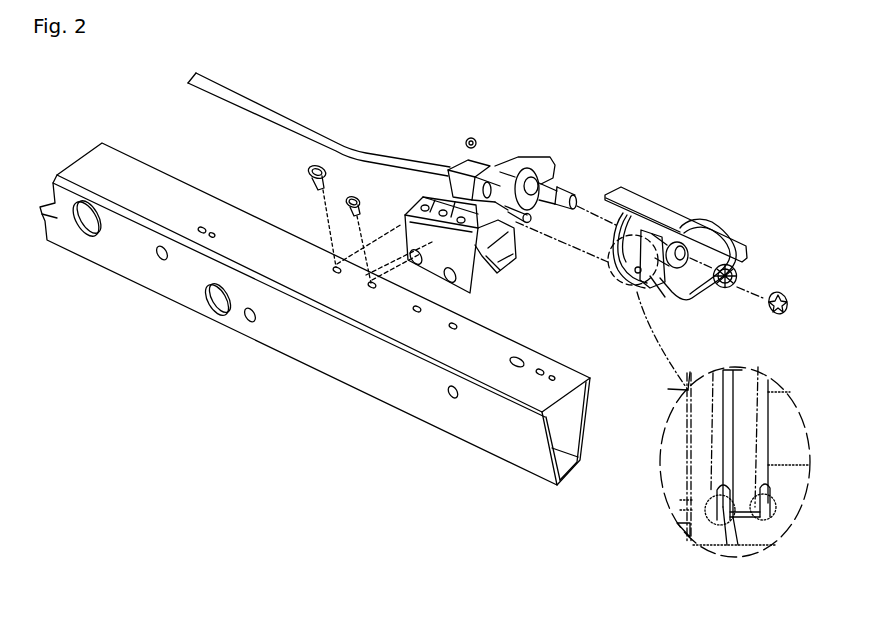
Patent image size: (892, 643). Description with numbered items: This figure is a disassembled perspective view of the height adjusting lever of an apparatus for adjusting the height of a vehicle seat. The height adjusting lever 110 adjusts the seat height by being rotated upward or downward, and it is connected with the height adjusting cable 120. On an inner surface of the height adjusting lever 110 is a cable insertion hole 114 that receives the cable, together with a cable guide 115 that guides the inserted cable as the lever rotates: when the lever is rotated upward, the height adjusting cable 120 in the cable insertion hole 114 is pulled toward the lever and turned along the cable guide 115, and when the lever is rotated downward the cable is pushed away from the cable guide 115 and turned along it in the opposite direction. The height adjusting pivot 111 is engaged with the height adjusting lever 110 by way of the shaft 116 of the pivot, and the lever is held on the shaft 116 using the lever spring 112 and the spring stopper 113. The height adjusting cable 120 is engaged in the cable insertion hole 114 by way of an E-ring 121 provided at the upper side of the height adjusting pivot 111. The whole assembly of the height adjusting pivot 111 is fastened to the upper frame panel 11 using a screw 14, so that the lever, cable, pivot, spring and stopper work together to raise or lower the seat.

The upper frame panel 11 is at (150, 275).
The screw 14 is at (307, 168).
The height adjusting lever 110 is at (640, 198).
The height adjusting pivot 111 is at (513, 167).
The lever spring 112 is at (740, 277).
The spring stopper 113 is at (797, 295).
The cable insertion hole 114 is at (635, 285).
The cable guide 115 is at (608, 280).
The shaft 116 is at (562, 193).
The height adjusting cable 120 is at (375, 148).
The ring 121 is at (473, 136).